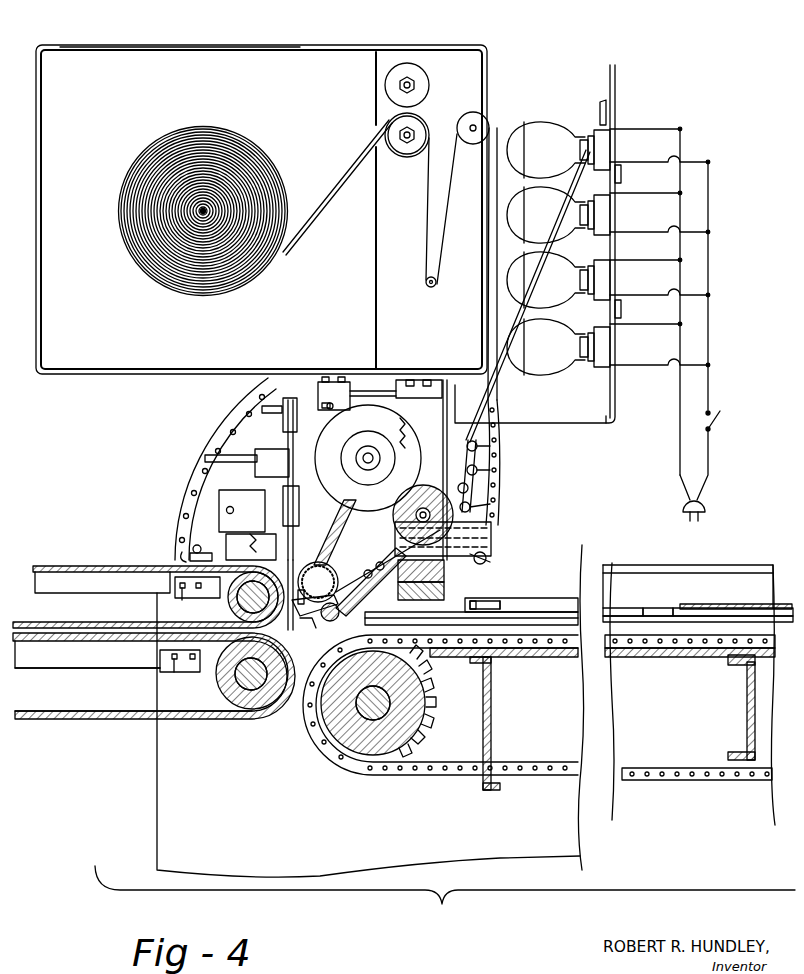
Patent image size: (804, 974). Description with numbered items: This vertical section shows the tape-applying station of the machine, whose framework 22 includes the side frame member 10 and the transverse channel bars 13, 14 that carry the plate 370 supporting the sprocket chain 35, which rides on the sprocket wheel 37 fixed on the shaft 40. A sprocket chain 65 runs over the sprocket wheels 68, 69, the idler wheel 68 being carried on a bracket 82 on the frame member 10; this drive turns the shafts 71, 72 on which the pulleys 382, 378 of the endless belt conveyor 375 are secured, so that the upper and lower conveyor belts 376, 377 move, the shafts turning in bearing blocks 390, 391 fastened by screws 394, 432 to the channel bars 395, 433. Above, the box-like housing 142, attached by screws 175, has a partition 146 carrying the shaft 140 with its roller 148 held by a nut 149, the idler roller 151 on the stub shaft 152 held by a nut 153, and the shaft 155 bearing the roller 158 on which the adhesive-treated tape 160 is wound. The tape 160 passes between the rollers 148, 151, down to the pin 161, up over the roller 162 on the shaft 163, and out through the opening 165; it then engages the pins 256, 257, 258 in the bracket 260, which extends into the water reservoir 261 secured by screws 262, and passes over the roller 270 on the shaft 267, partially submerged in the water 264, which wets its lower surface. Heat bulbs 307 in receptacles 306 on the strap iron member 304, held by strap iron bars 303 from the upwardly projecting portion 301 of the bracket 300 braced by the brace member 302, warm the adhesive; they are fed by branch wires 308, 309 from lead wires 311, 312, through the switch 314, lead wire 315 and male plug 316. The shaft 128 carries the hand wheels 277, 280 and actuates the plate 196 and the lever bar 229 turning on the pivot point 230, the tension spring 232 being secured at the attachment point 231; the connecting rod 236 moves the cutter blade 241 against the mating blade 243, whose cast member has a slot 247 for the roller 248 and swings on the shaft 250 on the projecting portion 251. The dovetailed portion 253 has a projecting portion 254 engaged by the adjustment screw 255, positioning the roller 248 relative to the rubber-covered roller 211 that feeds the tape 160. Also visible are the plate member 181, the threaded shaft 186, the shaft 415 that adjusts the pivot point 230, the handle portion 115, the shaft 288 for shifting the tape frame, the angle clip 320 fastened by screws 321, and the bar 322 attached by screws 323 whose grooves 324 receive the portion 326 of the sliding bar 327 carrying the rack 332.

The side frame member 10 is at (606, 560).
The transverse channel bar 13 is at (491, 694).
The transverse channel bar 14 is at (746, 718).
The framework 22 is at (155, 826).
The sprocket chain 35 is at (676, 648).
The sprocket wheel 37 is at (435, 720).
The shaft 40 is at (372, 720).
The sprocket chain 65 is at (212, 487).
The sprocket wheel 68 is at (200, 500).
The sprocket wheel 69 is at (250, 386).
The shaft 71 is at (252, 673).
The shaft 72 is at (230, 580).
The bracket 82 is at (186, 553).
The handle portion 115 is at (178, 534).
The shaft 128 is at (375, 446).
The shaft 140 is at (414, 84).
The box-like housing 142 is at (288, 48).
The partition 146 is at (264, 52).
The roller 148 is at (420, 70).
The nut 149 is at (410, 88).
The idler roller 151 is at (409, 157).
The stub shaft 152 is at (425, 130).
The nut 153 is at (403, 140).
The shaft 155 is at (208, 208).
The roller 158 is at (206, 214).
The tape 160 is at (322, 206).
The pin 161 is at (434, 287).
The roller 162 is at (473, 144).
The shaft 163 is at (476, 128).
The opening 165 is at (490, 112).
The screws 175 is at (427, 380).
The plate member 181 is at (277, 473).
The threaded shaft 186 is at (212, 454).
The plate 196 is at (328, 520).
The roller 211 is at (304, 565).
The lever bar 229 is at (318, 392).
The pivot point 230 is at (333, 410).
The spring attachment point 231 is at (421, 470).
The tension spring 232 is at (412, 433).
The connecting rod 236 is at (276, 544).
The cutter blade 241 is at (300, 606).
The mating blade 243 is at (302, 630).
The slot 247 is at (296, 616).
The roller 248 is at (330, 620).
The shaft 250 is at (328, 566).
The outwardly projecting portion 251 is at (368, 556).
The dovetailed portion 253 is at (437, 572).
The outwardly projecting portion 254 is at (405, 612).
The adjustment screw 255 is at (437, 591).
The pin 256 is at (498, 446).
The pin 257 is at (498, 470).
The pin 258 is at (470, 507).
The bracket 260 is at (480, 488).
The water reservoir 261 is at (491, 528).
The screws 262 is at (426, 520).
The water 264 is at (491, 540).
The shaft 267 is at (423, 515).
The roller 270 is at (396, 480).
The hand wheel 277 is at (378, 402).
The hand wheel 280 is at (364, 494).
The shaft 288 is at (487, 558).
The bracket 300 is at (552, 425).
The upwardly projecting portion 301 is at (612, 422).
The brace member 302 is at (603, 114).
The strap iron bars 303 is at (622, 176).
The strap iron member 304 is at (615, 92).
The bulb receptacles 306 is at (605, 142).
The incandescent bulbs 307 is at (560, 160).
The branch wire 308 is at (650, 129).
The branch wire 309 is at (637, 162).
The lead wire 311 is at (681, 138).
The lead wire 312 is at (709, 190).
The switch 314 is at (718, 424).
The lead wire 315 is at (709, 460).
The male plug 316 is at (705, 508).
The angle clip 320 is at (521, 598).
The screws 321 is at (472, 600).
The bar 322 is at (575, 582).
The screws 323 is at (502, 600).
The grooves 324 is at (610, 610).
The portion of bar 326 is at (645, 614).
The bar 327 is at (680, 612).
The rack 332 is at (722, 604).
The plate 370 is at (520, 657).
The endless belt conveyor 375 is at (56, 670).
The conveyor belt 376 is at (110, 560).
The conveyor belt 377 is at (86, 722).
The pulley 378 is at (238, 604).
The pulley 382 is at (232, 700).
The bearing blocks 390 is at (174, 581).
The bearing blocks 391 is at (165, 652).
The screws 394 is at (186, 600).
The channel bar 395 is at (52, 588).
The shaft 415 is at (280, 420).
The screws 432 is at (182, 680).
The channel bar 433 is at (112, 674).